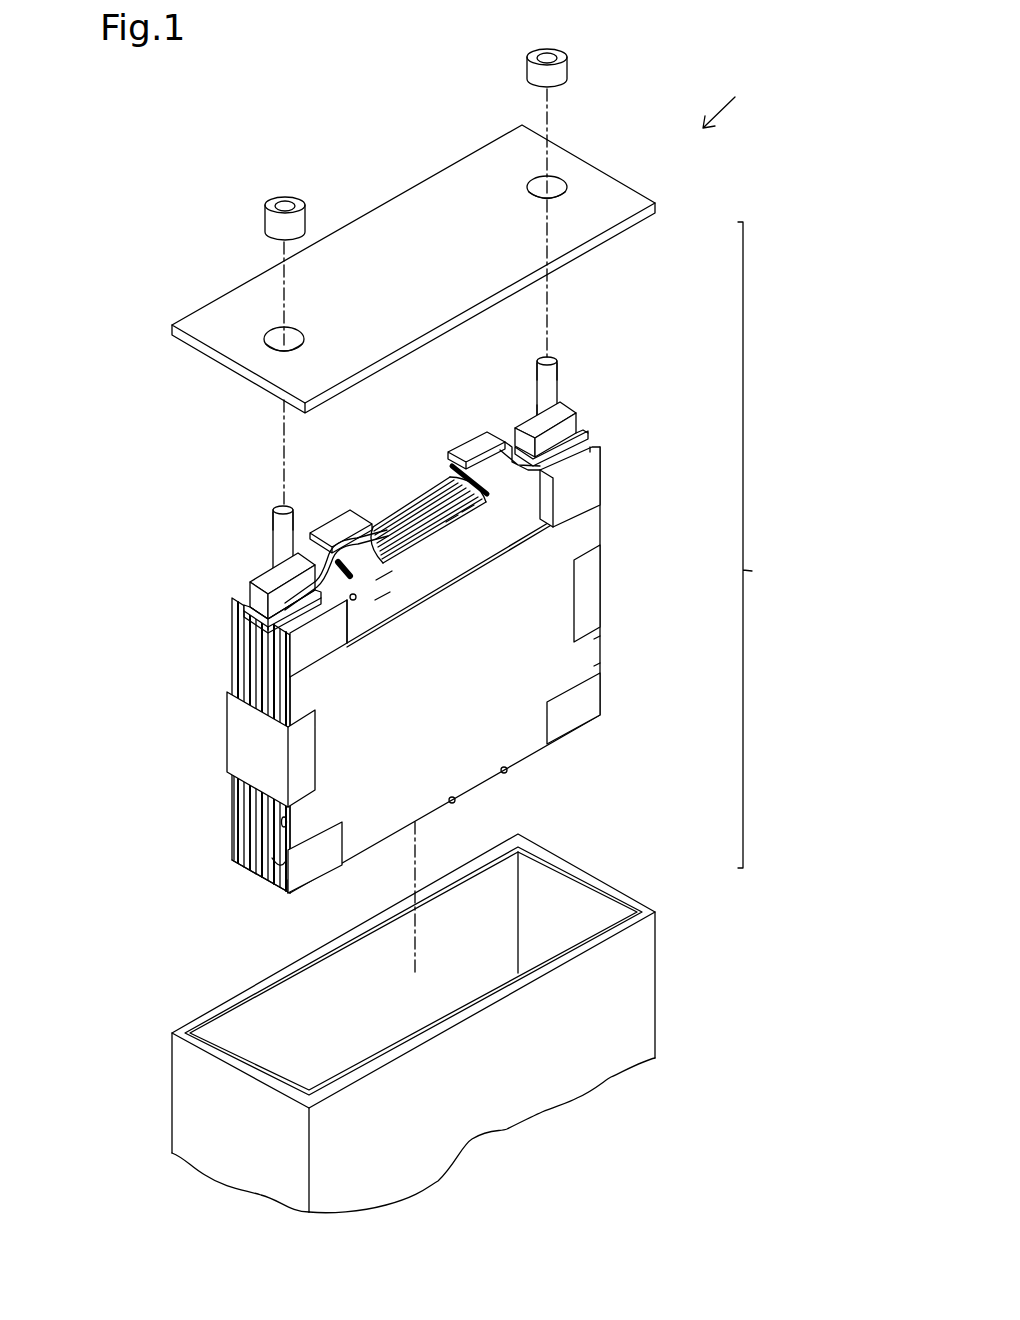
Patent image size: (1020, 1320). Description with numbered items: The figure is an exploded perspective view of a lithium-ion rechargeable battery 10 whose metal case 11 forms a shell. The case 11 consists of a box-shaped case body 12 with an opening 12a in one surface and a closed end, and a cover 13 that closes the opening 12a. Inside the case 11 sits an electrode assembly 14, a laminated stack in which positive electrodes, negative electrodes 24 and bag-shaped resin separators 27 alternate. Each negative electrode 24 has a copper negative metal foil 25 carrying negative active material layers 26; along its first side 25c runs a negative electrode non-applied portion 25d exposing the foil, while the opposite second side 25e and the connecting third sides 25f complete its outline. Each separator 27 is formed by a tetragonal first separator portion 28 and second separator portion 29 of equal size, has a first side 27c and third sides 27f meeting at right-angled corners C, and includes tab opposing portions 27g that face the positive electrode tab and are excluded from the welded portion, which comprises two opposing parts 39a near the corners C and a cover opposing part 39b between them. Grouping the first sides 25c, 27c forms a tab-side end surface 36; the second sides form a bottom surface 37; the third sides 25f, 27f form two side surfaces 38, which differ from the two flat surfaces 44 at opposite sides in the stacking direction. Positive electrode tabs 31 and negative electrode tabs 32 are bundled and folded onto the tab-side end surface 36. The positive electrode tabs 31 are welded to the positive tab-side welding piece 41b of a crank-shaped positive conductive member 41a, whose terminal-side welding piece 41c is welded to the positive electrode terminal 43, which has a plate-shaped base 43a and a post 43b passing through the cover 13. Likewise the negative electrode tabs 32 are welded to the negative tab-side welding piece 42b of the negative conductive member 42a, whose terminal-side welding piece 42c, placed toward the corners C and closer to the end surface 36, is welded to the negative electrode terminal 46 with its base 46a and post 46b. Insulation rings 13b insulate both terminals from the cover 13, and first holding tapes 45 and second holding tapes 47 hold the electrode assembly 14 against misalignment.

The rechargeable battery 10 is at (722, 98).
The case 11 is at (759, 545).
The case body 12 is at (632, 902).
The opening 12a is at (564, 940).
The cover 13 is at (658, 207).
The insulation ring 13b is at (568, 62).
The electrode assembly 14 is at (236, 883).
The negative electrode 24 is at (600, 525).
The negative metal foil 25 is at (377, 532).
The first side 25c is at (350, 600).
The negative electrode non-applied portion 25d is at (382, 603).
The second side 25e is at (452, 797).
The third side 25f is at (288, 822).
The negative active material layer 26 is at (595, 664).
The separator 27 is at (418, 517).
The first side 27c is at (452, 518).
The third side 27f is at (280, 866).
The tab opposing portion 27g is at (383, 577).
The first separator portion 28 is at (278, 893).
The second separator portion 29 is at (277, 890).
The positive electrode tab 31 is at (338, 552).
The negative electrode tab 32 is at (503, 476).
The tab-side end surface 36 is at (393, 497).
The bottom surface 37 is at (504, 768).
The side surface 38 is at (237, 793).
The opposing part 39a is at (333, 604).
The cover opposing part 39b is at (468, 507).
The positive conductive member 41a is at (238, 594).
The positive tab-side welding piece 41b is at (342, 530).
The terminal-side welding piece 41c is at (233, 627).
The negative conductive member 42a is at (590, 441).
The negative tab-side welding piece 42b is at (466, 455).
The terminal-side welding piece 42c is at (570, 407).
The positive electrode terminal 43 is at (273, 535).
The base 43a is at (265, 573).
The post 43b is at (289, 533).
The flat surface 44 is at (594, 641).
The first holding tape 45 is at (348, 657).
The negative electrode terminal 46 is at (528, 415).
The base 46a is at (556, 403).
The post 46b is at (557, 380).
The second holding tape 47 is at (307, 757).
The corner C is at (268, 622).